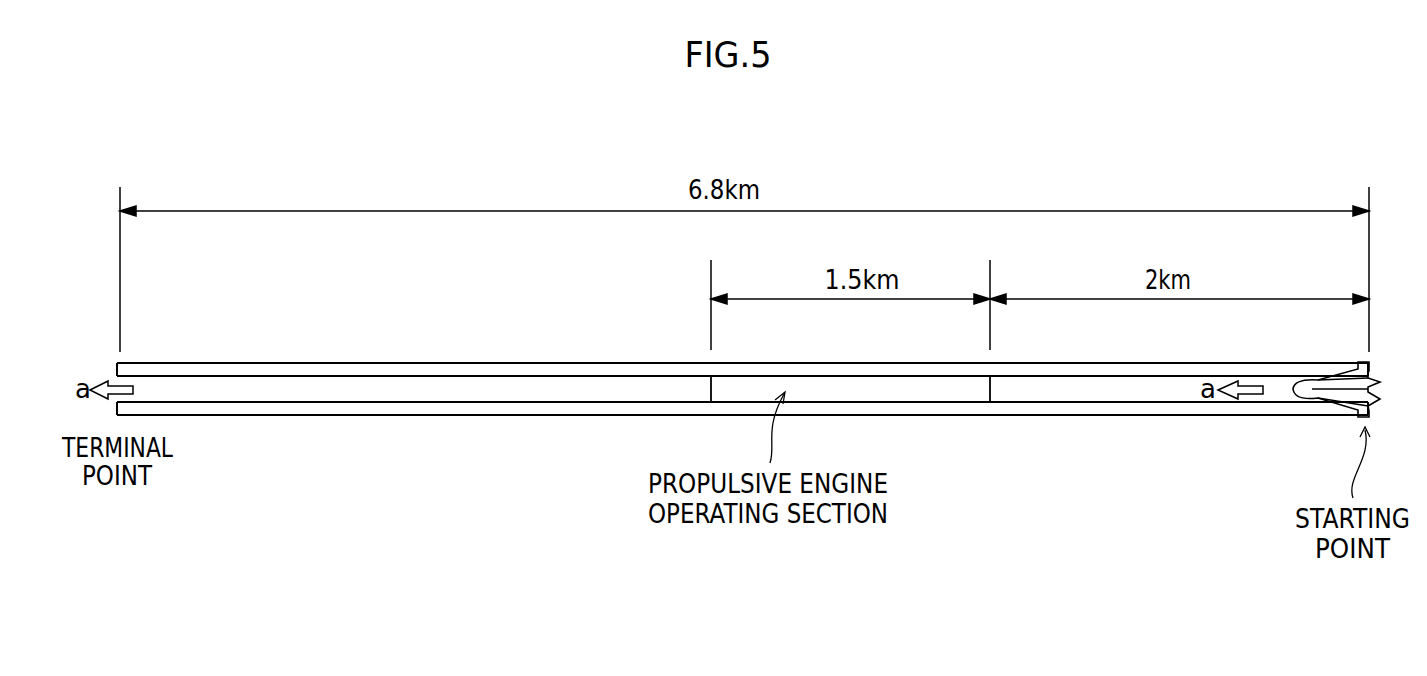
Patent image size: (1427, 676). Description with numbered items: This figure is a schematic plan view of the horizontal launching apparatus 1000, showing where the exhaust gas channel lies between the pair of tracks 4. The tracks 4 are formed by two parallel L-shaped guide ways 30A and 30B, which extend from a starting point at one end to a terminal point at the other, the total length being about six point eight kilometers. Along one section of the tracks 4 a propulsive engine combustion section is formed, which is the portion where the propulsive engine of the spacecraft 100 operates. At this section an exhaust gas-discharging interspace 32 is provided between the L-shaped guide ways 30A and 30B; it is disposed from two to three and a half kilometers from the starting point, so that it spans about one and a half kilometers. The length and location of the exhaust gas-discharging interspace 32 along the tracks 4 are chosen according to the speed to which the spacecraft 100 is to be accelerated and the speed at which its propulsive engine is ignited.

The horizontal launching apparatus 1000 is at (1174, 362).
The tracks 4 is at (1137, 418).
The L-shaped guide way 30A is at (1062, 409).
The L-shaped guide way 30B is at (1064, 375).
The exhaust gas-discharging interspace 32 is at (907, 392).
The spacecraft 100 is at (1310, 392).